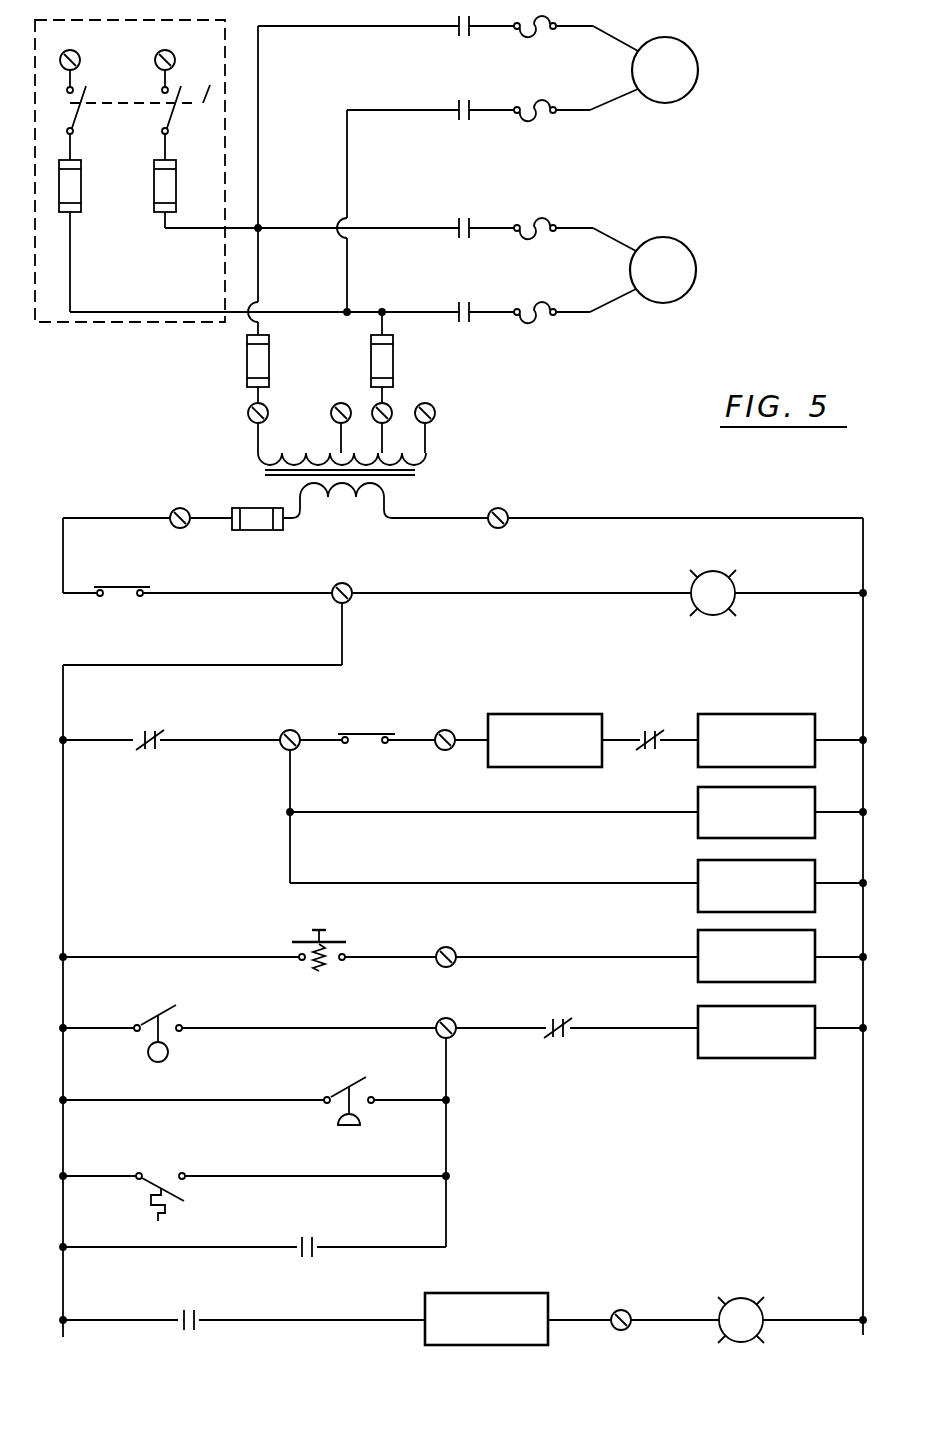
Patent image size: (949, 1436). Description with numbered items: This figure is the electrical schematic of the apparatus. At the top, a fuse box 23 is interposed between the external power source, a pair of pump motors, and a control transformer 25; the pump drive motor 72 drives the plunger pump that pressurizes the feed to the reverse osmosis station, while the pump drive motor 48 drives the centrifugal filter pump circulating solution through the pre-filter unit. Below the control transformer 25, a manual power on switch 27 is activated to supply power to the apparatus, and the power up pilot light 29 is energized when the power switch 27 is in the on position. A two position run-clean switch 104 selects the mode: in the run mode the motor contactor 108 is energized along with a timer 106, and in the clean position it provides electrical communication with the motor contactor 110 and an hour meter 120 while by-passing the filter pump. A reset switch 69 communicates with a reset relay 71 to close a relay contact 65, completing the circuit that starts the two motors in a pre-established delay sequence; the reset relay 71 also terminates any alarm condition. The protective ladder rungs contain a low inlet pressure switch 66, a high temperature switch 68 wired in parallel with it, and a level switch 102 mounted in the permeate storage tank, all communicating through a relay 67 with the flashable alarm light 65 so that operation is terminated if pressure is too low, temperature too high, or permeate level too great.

The fuse box 23 is at (158, 15).
The pump drive motor 72 is at (700, 52).
The pump drive motor 48 is at (698, 258).
The control transformer 25 is at (420, 473).
The manual power on switch 27 is at (114, 587).
The power up pilot light 29 is at (705, 573).
The alarm light / relay contact 65 is at (142, 736).
The run-clean switch 104 is at (363, 733).
The timer 106 is at (540, 714).
The motor contactor 108 is at (755, 714).
The motor contactor 110 is at (698, 797).
The hour meter 120 is at (698, 870).
The reset switch 69 is at (303, 942).
The reset relay 71 is at (698, 942).
The level switch 102 is at (150, 1022).
The relay 67 is at (698, 1018).
The low inlet pressure switch 66 is at (342, 1092).
The high temperature switch 68 is at (148, 1172).